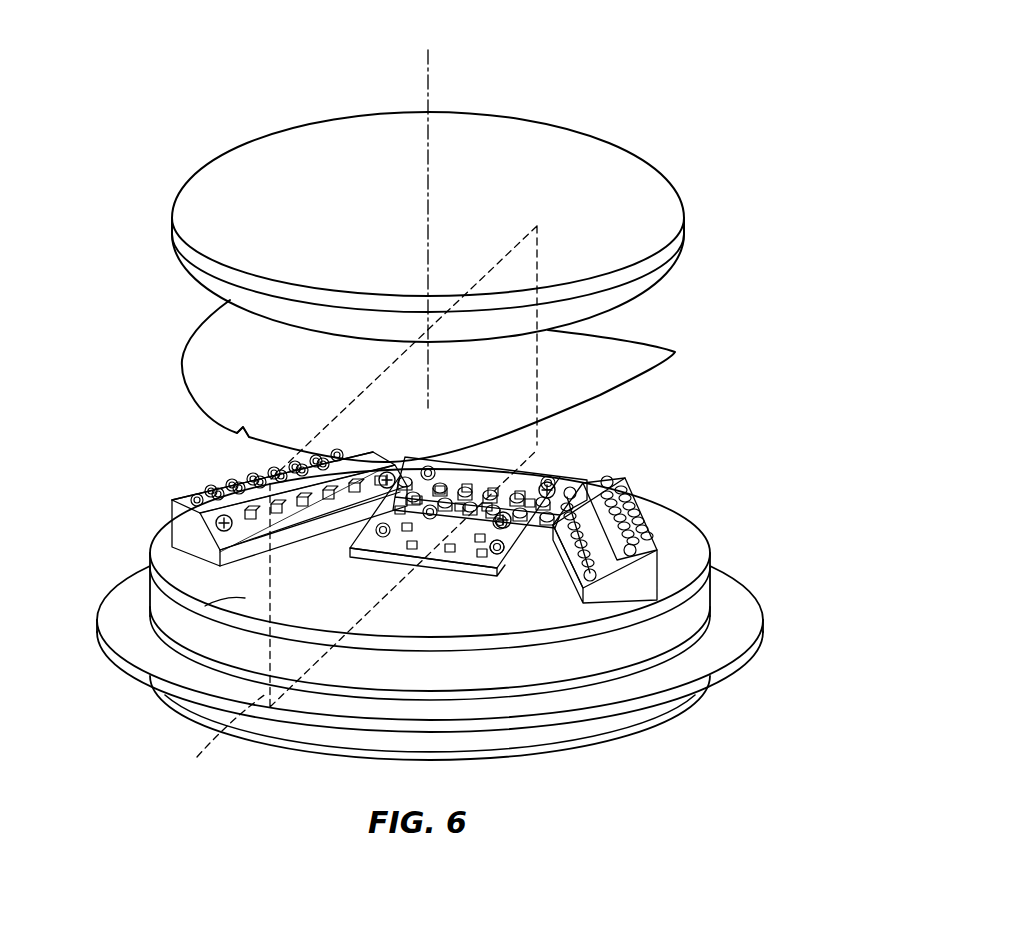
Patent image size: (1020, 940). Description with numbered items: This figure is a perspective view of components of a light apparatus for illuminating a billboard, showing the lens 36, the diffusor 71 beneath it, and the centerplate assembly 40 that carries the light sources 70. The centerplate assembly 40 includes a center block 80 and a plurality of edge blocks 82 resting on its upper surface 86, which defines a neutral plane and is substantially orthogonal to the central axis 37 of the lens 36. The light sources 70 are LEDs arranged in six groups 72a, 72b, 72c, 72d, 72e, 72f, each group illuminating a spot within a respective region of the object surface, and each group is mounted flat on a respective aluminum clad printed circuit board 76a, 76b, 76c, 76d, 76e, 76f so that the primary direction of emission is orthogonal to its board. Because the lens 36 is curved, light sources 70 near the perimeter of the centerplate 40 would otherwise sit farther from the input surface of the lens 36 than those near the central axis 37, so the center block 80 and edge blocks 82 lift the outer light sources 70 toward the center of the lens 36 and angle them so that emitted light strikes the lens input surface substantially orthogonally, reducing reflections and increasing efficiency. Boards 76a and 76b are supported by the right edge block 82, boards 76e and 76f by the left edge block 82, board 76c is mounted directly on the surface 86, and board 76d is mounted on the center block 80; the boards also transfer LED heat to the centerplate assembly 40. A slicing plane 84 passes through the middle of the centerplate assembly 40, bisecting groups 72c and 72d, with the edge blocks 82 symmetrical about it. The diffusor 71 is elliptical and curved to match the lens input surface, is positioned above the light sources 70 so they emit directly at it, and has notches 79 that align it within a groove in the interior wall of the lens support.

The lens 36 is at (648, 205).
The central axis 37 is at (430, 157).
The centerplate assembly 40 is at (733, 595).
The light sources 70 is at (367, 558).
The diffusor 71 is at (648, 358).
The group of light sources 72a is at (634, 480).
The group of light sources 72b is at (566, 570).
The group of light sources 72c is at (408, 563).
The group of light sources 72d is at (470, 476).
The group of light sources 72e is at (172, 547).
The group of light sources 72f is at (174, 497).
The printed circuit board 76a is at (627, 553).
The printed circuit board 76b is at (605, 605).
The printed circuit board 76c is at (468, 566).
The printed circuit board 76d is at (522, 477).
The printed circuit board 76e is at (166, 546).
The printed circuit board 76f is at (170, 503).
The notch 79 is at (241, 431).
The center block 80 is at (590, 482).
The edge block 82 is at (170, 528).
The slicing plane 84 is at (219, 738).
The upper surface 86 is at (205, 606).